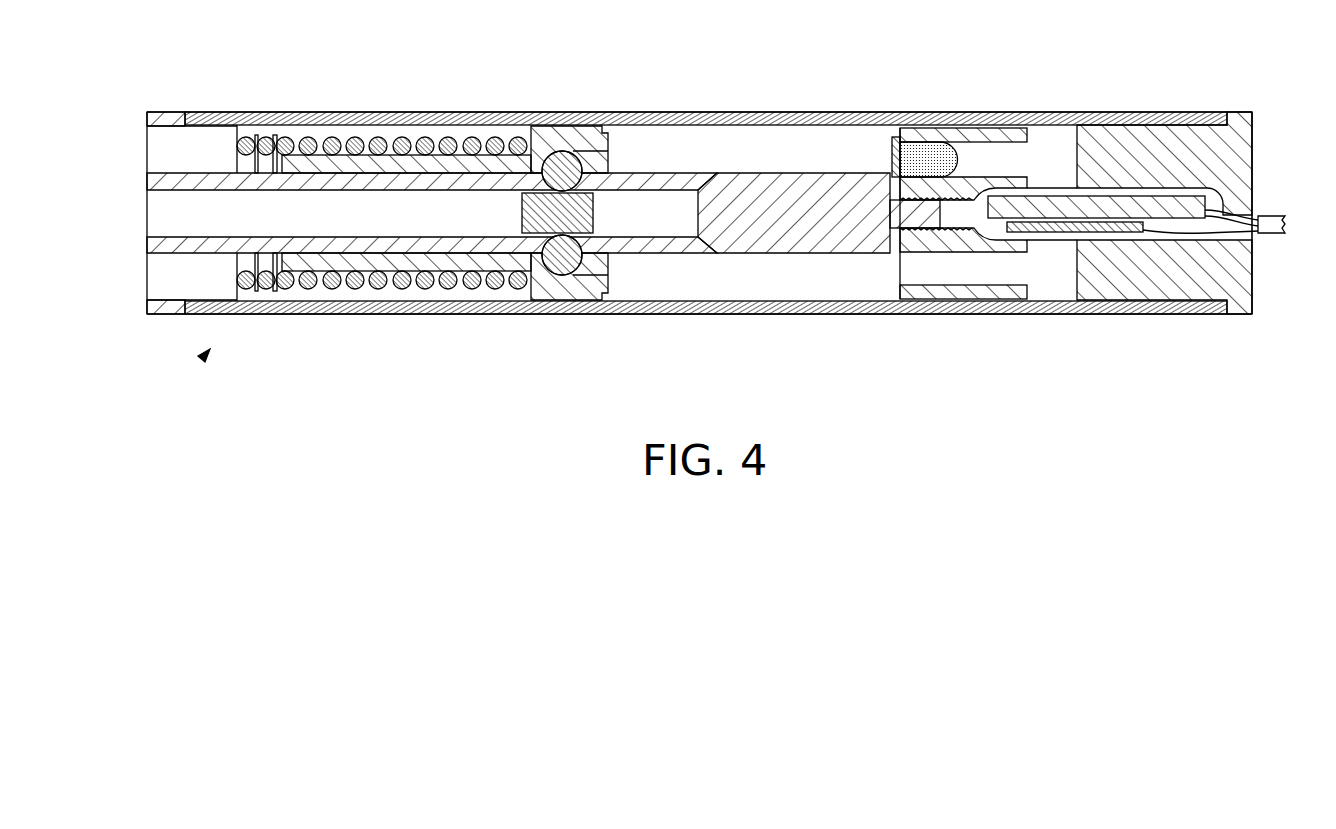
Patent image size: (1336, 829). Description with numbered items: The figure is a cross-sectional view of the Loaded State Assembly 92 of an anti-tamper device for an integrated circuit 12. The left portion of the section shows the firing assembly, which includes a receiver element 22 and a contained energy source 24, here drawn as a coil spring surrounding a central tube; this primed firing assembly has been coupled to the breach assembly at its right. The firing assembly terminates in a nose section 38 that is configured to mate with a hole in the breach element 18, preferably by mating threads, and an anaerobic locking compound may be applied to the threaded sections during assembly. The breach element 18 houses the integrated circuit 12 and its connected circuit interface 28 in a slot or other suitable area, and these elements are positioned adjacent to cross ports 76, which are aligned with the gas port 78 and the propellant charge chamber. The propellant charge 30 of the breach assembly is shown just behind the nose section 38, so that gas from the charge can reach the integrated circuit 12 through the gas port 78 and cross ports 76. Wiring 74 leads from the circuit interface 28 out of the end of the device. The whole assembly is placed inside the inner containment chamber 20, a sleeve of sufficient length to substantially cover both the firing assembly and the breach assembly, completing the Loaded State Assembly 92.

The integrated circuit 12 is at (1143, 228).
The breach element 18 is at (1240, 314).
The inner containment chamber 20 is at (1128, 112).
The receiver element 22 is at (160, 112).
The contained energy source 24 is at (393, 136).
The circuit interface 28 is at (1213, 215).
The propellant charge 30 is at (927, 150).
The nose section 38 is at (927, 218).
The connector 74 is at (1275, 233).
The cross ports 76 is at (1053, 150).
The gas port 78 is at (913, 268).
The Loaded State Assembly 92 is at (205, 355).